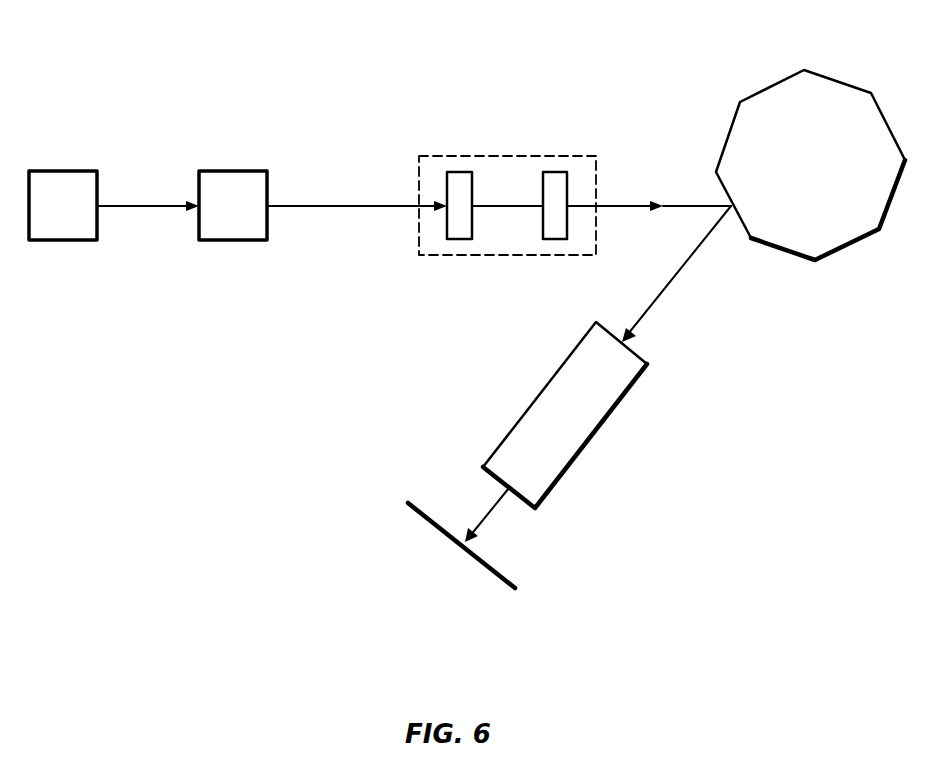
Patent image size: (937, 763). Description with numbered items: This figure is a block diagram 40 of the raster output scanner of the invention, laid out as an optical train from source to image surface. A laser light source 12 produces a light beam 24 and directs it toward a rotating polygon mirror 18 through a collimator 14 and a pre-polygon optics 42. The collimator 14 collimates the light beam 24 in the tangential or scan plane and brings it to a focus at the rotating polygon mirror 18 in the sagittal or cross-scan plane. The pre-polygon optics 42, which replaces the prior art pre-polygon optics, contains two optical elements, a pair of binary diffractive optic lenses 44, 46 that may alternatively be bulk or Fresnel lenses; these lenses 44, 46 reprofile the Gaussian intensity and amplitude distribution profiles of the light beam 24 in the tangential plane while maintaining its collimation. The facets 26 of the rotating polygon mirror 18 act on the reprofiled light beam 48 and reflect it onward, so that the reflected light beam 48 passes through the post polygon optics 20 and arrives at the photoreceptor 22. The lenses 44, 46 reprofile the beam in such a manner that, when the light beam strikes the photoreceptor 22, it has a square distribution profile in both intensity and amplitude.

The block diagram 40 is at (363, 51).
The laser light source 12 is at (43, 171).
The collimator 14 is at (213, 171).
The light beam 24 is at (112, 206).
The pre-polygon optics 42 is at (508, 153).
The binary diffractive optic lens 44 is at (460, 239).
The binary diffractive optic lens 46 is at (556, 239).
The reprofiled light beam 48 is at (693, 202).
The rotating polygon mirror 18 is at (824, 88).
The facets 26 is at (782, 250).
The post polygon optics 20 is at (597, 407).
The photoreceptor 22 is at (487, 570).